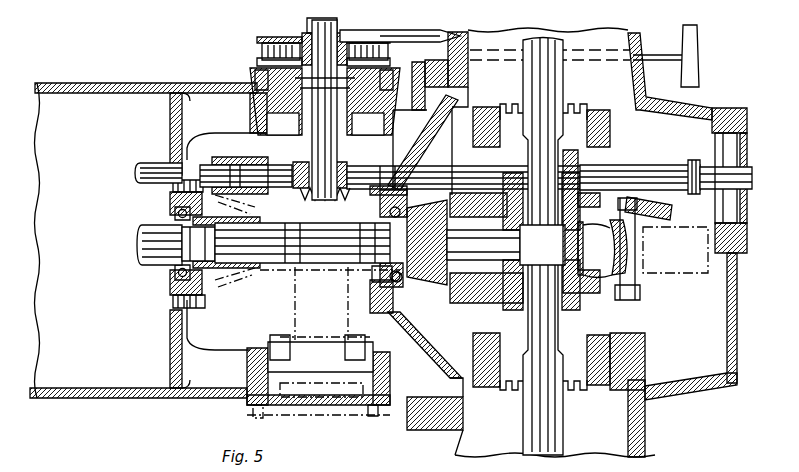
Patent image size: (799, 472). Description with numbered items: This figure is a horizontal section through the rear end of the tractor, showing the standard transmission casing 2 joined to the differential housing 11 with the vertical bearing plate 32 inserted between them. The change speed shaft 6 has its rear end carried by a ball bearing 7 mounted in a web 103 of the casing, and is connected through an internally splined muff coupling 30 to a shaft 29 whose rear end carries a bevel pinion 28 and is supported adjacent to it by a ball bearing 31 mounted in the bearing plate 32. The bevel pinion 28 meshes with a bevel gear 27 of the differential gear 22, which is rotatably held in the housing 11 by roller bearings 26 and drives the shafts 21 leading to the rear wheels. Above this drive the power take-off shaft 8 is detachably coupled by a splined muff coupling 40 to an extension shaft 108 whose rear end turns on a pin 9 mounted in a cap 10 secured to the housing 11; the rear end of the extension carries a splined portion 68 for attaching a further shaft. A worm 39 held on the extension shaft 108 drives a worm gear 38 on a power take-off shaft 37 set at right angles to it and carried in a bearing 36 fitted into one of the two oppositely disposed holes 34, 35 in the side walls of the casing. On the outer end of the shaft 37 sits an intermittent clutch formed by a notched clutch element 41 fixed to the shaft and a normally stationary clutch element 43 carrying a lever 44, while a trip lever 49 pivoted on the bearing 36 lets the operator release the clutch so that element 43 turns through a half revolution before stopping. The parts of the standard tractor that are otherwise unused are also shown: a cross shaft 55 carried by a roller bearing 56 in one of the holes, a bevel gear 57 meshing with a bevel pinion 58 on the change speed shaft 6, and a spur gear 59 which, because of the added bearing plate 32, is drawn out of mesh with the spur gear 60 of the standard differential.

The transmission casing 2 is at (103, 83).
The change speed shaft 6 is at (148, 265).
The ball bearing 7 is at (175, 214).
The power take-off shaft 8 is at (142, 172).
The pin 9 is at (752, 178).
The cap 10 is at (749, 135).
The differential housing 11 is at (712, 393).
The shaft 21 is at (563, 84).
The differential gear 22 is at (607, 253).
The roller bearings 26 is at (588, 140).
The bevel gear 27 is at (660, 222).
The bevel pinion 28 is at (428, 282).
The shaft 29 is at (332, 264).
The internally splined muff coupling 30 is at (265, 270).
The ball bearing 31 is at (372, 277).
The bearing plate 32 is at (420, 348).
The hole 34 is at (372, 402).
The hole 35 is at (373, 101).
The bearing 36 is at (312, 146).
The power take-off shaft 37 is at (312, 128).
The worm gear 38 is at (357, 168).
The worm 39 is at (322, 198).
The splined muff coupling 40 is at (236, 160).
The clutch element 41 is at (257, 62).
The clutch element 43 is at (258, 44).
The lever 44 is at (420, 40).
The trip lever 49 is at (664, 60).
The cross shaft 55 is at (295, 325).
The roller bearing 56 is at (288, 342).
The bevel gear 57 is at (255, 195).
The bevel pinion 58 is at (233, 280).
The spur gear 59 is at (295, 268).
The spur gear 60 is at (683, 275).
The splined portion 68 is at (696, 163).
The web 103 is at (170, 125).
The extension shaft 108 is at (400, 162).